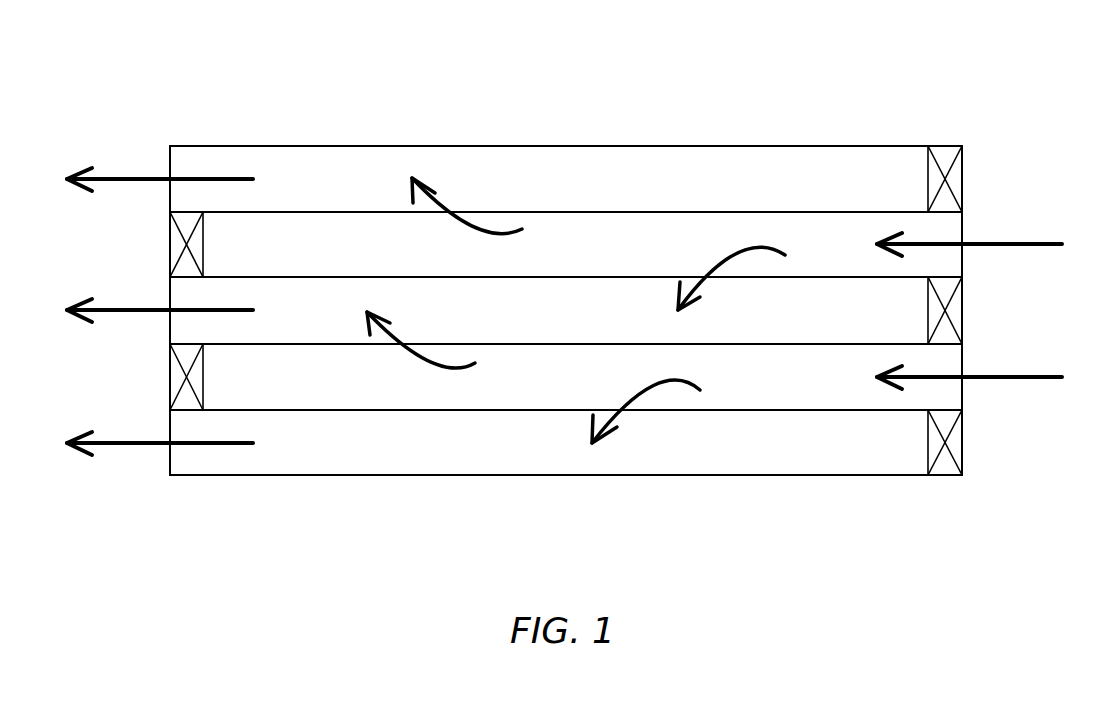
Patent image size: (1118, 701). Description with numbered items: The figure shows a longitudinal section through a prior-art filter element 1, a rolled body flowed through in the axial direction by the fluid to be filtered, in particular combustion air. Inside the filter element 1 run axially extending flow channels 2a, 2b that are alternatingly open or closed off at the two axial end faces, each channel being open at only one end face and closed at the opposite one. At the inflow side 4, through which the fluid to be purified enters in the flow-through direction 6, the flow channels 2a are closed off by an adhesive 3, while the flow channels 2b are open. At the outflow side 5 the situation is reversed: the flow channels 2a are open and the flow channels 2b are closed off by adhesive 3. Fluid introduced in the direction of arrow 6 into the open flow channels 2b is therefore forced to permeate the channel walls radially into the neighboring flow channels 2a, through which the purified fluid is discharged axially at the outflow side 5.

The filter element 1 is at (190, 100).
The flow channels 2a is at (605, 191).
The flow channels 2b is at (605, 258).
The adhesive 3 is at (176, 242).
The inflow side 4 is at (970, 168).
The outflow side 5 is at (160, 152).
The flow-through direction 6 is at (1003, 242).